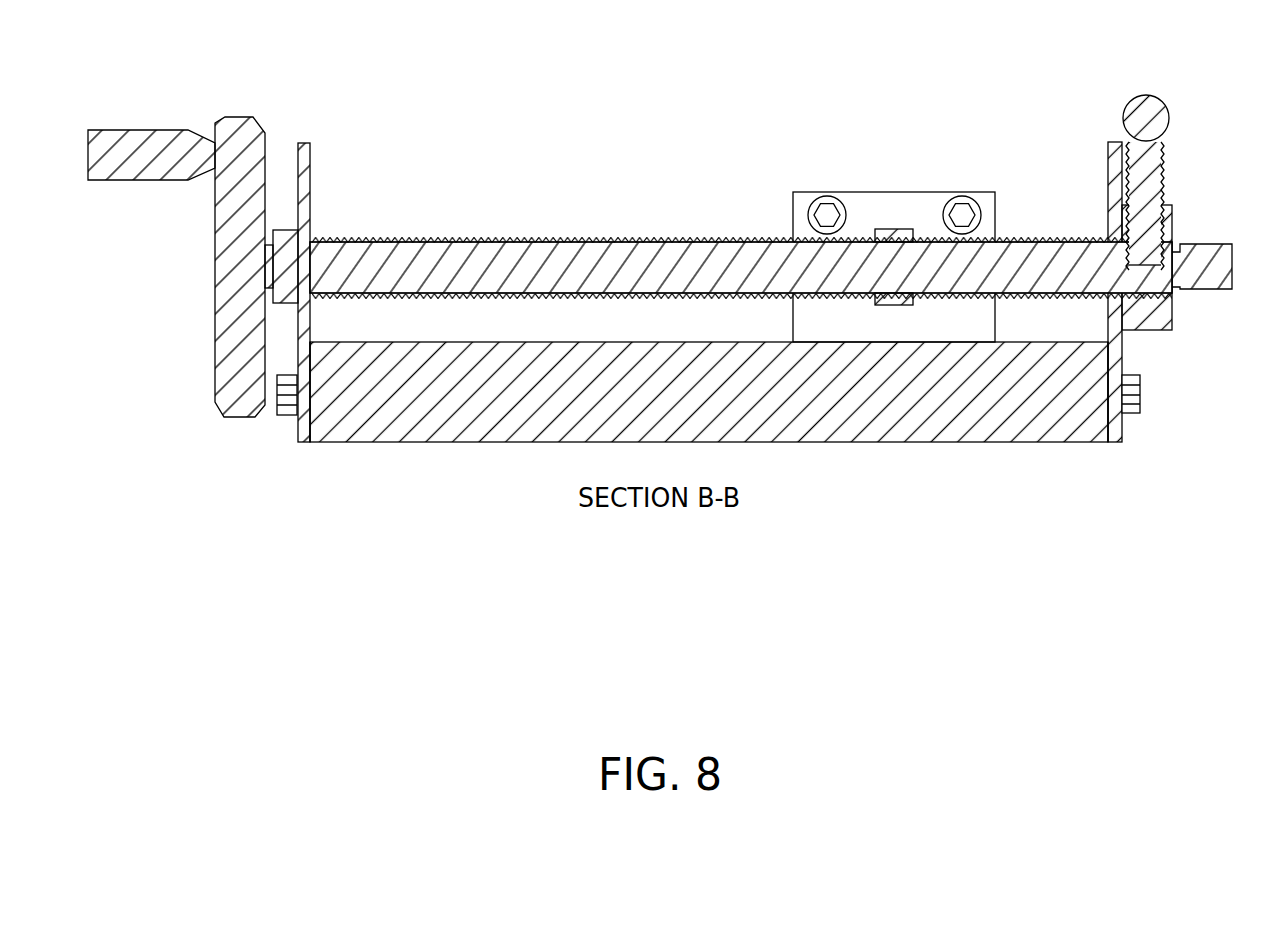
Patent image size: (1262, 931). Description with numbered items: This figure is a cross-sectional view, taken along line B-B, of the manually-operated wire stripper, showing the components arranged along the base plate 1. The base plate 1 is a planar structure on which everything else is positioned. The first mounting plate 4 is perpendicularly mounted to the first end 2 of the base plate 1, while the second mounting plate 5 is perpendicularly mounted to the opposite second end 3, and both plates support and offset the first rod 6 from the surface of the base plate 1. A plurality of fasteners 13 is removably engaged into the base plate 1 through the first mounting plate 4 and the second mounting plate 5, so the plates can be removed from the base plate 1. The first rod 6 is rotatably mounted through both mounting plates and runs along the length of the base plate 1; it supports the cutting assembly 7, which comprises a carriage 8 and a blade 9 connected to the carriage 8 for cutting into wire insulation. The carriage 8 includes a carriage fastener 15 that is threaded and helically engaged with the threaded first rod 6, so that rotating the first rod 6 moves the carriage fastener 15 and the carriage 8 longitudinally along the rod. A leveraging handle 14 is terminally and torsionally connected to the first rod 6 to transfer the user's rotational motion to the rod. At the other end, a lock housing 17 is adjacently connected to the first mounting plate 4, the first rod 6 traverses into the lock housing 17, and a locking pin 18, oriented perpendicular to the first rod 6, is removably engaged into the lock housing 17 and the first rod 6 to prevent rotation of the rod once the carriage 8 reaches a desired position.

The base plate 1 is at (903, 455).
The first end 2 is at (1103, 412).
The second end 3 is at (314, 403).
The first mounting plate 4 is at (1113, 142).
The second mounting plate 5 is at (305, 143).
The first rod 6 is at (546, 228).
The cutting assembly 7 is at (780, 216).
The carriage 8 is at (990, 197).
The blade 9 is at (792, 294).
The plurality of fasteners 13 is at (278, 414).
The leveraging handle 14 is at (92, 129).
The carriage fastener 15 is at (893, 233).
The lock housing 17 is at (1172, 213).
The locking pin 18 is at (1148, 103).